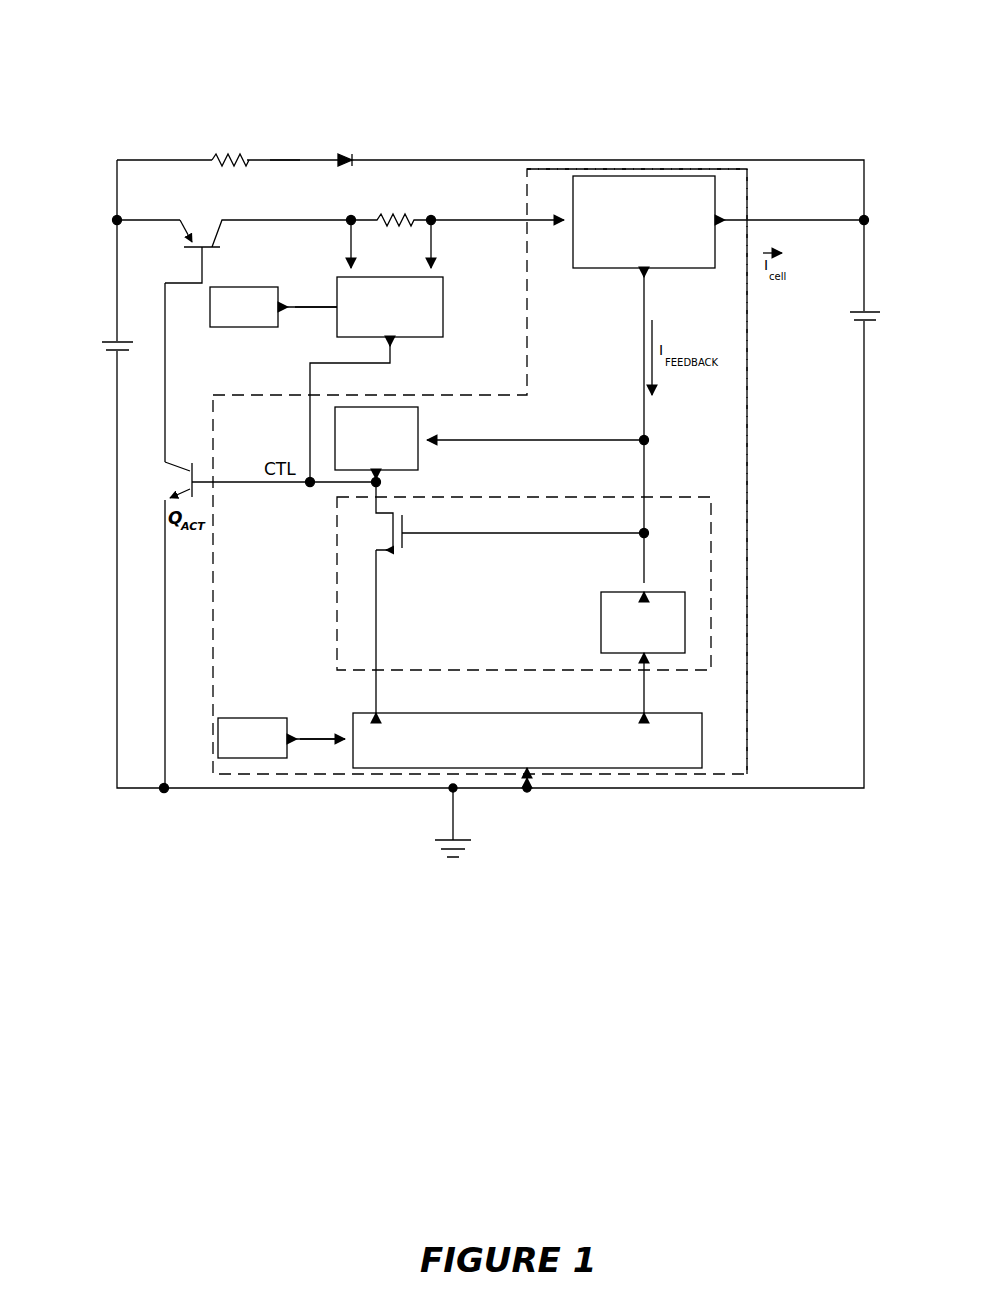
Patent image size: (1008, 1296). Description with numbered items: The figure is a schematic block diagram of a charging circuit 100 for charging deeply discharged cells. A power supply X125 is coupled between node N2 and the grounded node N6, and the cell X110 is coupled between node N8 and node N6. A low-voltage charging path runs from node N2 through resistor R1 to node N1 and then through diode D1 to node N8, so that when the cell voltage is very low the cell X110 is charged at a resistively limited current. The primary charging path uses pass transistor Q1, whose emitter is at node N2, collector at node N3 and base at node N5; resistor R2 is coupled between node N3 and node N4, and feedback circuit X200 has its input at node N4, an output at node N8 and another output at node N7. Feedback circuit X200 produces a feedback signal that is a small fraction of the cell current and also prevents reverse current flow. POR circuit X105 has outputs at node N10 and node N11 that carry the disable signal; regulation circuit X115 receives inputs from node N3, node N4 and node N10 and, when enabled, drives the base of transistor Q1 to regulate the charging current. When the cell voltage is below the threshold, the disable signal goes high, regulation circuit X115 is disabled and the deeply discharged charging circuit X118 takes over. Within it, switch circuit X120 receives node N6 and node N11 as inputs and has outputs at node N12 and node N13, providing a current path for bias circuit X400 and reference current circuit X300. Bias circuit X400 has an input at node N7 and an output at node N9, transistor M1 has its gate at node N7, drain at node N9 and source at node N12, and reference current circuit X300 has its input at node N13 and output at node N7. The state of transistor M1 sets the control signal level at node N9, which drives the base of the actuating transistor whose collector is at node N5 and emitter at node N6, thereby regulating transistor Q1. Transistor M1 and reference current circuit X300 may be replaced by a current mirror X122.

The charging circuit 100 is at (462, 54).
The node N1 is at (306, 135).
The diode D1 is at (350, 152).
The resistor R1 is at (230, 169).
The resistor R2 is at (391, 228).
The transistor Q1 is at (248, 251).
The node N2 is at (95, 211).
The node N3 is at (352, 218).
The node N4 is at (462, 218).
The node N5 is at (162, 366).
The node N6 is at (95, 785).
The node N7 is at (660, 440).
The node N8 is at (880, 220).
The node N9 is at (388, 486).
The node N10 is at (322, 294).
The node N11 is at (336, 709).
The node N12 is at (384, 626).
The node N13 is at (632, 689).
The power on reset (POR) circuit X105 is at (261, 288).
The cell X110 is at (864, 324).
The regulation circuit X115 is at (452, 314).
The deeply discharged charging circuit X118 is at (758, 418).
The switch circuit X120 is at (480, 711).
The current mirror X122 is at (542, 496).
The power supply X125 is at (102, 346).
The feedback circuit X200 is at (683, 272).
The reference current circuit X300 is at (669, 565).
The bias circuit X400 is at (430, 416).
The transistor M1 is at (497, 516).